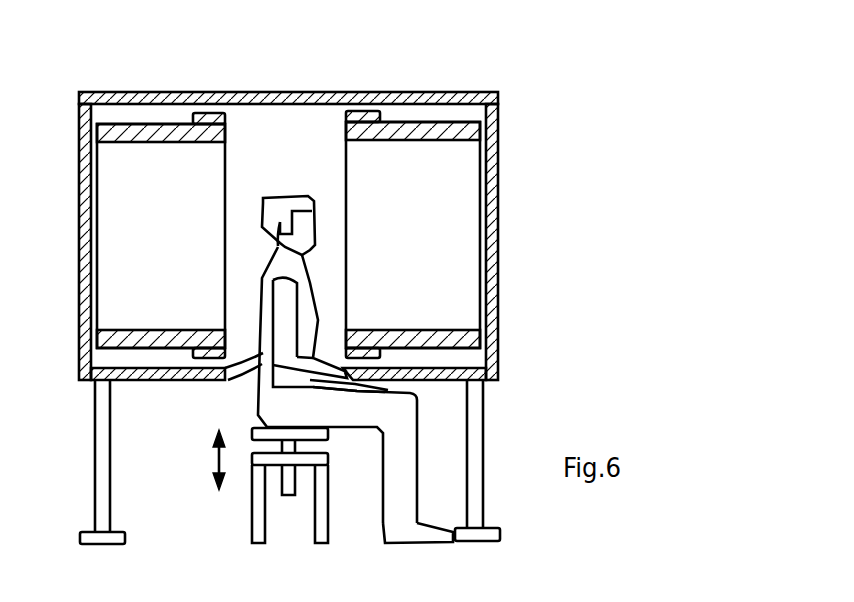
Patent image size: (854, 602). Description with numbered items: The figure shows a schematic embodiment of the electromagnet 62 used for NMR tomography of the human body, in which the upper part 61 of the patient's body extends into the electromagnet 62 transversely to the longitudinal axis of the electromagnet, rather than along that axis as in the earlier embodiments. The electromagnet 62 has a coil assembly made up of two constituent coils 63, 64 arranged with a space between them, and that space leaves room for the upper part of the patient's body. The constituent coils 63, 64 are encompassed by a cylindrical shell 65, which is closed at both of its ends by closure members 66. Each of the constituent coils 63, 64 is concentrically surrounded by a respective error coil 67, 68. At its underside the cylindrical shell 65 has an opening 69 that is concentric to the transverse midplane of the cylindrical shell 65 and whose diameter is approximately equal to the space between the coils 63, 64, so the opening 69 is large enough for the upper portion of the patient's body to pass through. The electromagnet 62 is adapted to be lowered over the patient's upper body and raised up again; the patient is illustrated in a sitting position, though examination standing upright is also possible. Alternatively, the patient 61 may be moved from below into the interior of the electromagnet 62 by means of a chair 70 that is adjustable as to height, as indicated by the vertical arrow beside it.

The upper part of the patient's body 61 is at (313, 298).
The electromagnet 62 is at (293, 285).
The constituent coil 63 is at (167, 143).
The constituent coil 64 is at (442, 133).
The cylindrical shell 65 is at (128, 92).
The closure members 66 is at (82, 232).
The error coil 67 is at (200, 113).
The error coil 68 is at (368, 92).
The opening 69 is at (238, 380).
The chair 70 is at (255, 500).